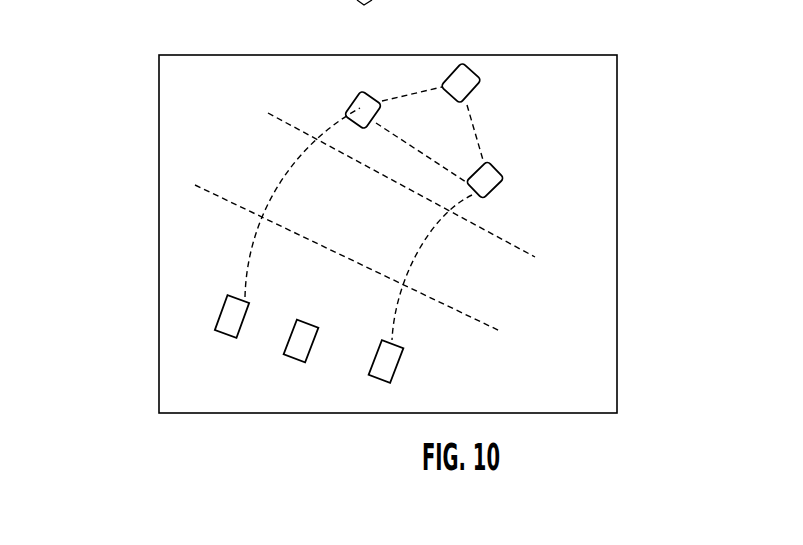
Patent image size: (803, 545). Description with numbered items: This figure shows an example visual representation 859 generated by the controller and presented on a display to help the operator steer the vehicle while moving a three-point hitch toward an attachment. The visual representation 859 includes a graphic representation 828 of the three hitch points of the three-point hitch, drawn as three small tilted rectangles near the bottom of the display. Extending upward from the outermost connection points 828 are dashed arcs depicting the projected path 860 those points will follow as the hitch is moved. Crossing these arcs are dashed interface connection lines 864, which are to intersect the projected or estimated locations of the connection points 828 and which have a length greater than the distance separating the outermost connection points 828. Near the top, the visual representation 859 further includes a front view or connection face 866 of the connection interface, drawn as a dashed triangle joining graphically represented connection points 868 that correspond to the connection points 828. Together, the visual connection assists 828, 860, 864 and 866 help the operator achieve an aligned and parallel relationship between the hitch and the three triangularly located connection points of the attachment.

The visual representation 859 is at (616, 56).
The projected path 860 is at (283, 183).
The interface connection lines 864 is at (223, 200).
The connection face 866 is at (495, 128).
The connection points 868 is at (363, 105).
The graphic representation of hitch connection points 828 is at (222, 297).